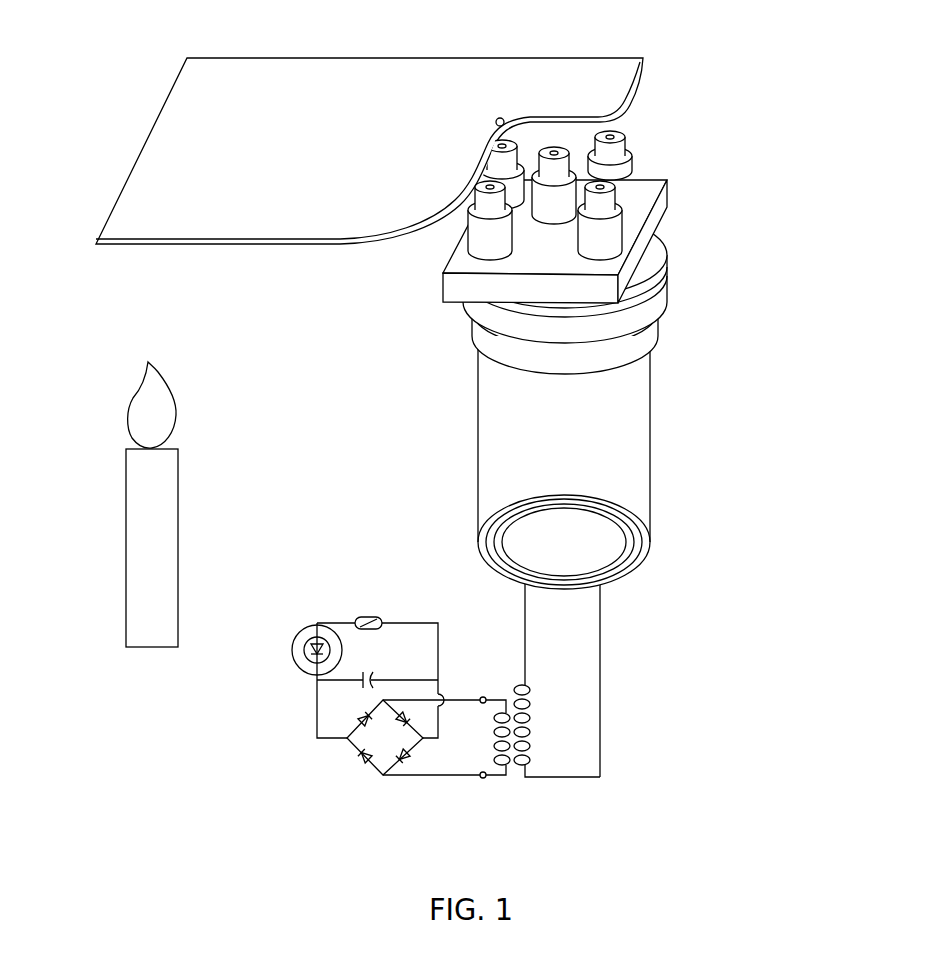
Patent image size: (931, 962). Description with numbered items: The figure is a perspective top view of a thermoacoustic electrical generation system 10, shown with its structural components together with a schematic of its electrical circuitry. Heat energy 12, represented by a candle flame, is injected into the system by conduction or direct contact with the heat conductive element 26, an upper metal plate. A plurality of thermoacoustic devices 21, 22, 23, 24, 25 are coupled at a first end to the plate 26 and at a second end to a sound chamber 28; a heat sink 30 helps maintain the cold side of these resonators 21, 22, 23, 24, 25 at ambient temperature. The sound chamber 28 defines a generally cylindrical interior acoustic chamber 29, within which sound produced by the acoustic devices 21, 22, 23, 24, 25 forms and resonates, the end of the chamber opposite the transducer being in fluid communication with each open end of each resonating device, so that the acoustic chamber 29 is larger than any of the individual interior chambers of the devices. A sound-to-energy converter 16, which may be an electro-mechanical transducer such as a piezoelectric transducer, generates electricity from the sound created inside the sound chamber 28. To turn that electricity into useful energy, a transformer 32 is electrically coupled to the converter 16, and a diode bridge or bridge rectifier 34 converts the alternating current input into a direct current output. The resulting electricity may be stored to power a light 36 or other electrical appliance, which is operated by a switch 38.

The thermoacoustic electrical generation system 10 is at (662, 150).
The heat energy 12 is at (153, 423).
The sound-to-energy converter 16 is at (580, 555).
The thermoacoustic device 21 is at (478, 233).
The thermoacoustic device 22 is at (510, 163).
The thermoacoustic device 23 is at (547, 208).
The thermoacoustic device 24 is at (620, 178).
The thermoacoustic device 25 is at (605, 230).
The heat conductive element 26 is at (148, 157).
The sound chamber 28 is at (650, 433).
The interior acoustic chamber 29 is at (518, 453).
The heat sink 30 is at (463, 335).
The transformer 32 is at (512, 785).
The bridge rectifier 34 is at (377, 768).
The light 36 is at (296, 655).
The switch 38 is at (366, 617).